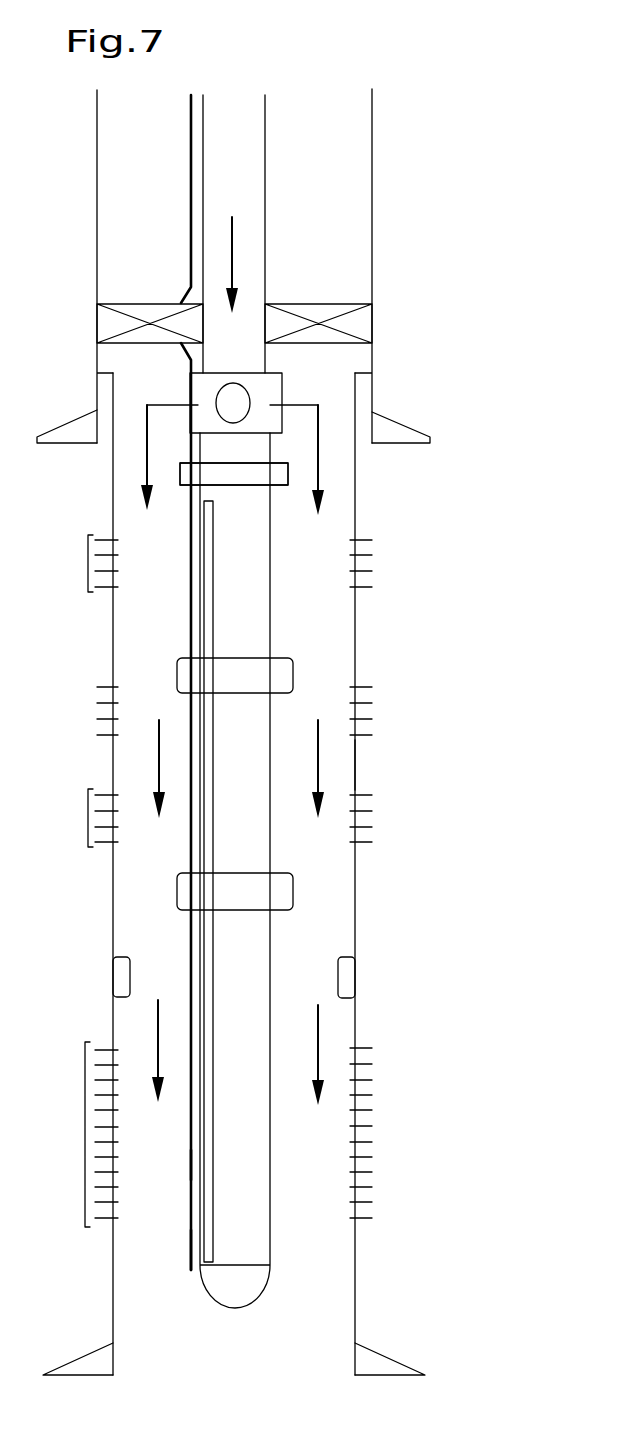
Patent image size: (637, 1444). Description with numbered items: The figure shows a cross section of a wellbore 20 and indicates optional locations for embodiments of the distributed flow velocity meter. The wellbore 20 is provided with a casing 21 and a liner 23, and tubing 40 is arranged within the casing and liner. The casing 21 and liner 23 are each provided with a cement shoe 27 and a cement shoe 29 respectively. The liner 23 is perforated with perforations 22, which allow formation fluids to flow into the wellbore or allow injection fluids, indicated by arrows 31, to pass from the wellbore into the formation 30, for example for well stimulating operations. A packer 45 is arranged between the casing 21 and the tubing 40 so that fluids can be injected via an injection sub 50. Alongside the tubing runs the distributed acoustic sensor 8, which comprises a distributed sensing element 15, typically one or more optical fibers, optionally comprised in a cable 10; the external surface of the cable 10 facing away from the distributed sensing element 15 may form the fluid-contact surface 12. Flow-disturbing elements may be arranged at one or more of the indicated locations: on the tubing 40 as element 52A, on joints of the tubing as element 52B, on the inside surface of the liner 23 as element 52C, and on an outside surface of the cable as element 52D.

The distributed acoustic sensor 8 is at (176, 148).
The cable 10 is at (180, 188).
The fluid-contact surface 12 is at (188, 818).
The distributed sensing element 15 is at (188, 1240).
The wellbore 20 is at (475, 828).
The casing 21 is at (97, 145).
The perforations 22 is at (88, 563).
The liner 23 is at (113, 620).
The cement shoe 27 is at (70, 432).
The cement shoe 29 is at (88, 1362).
The formation 30 is at (540, 549).
The injection fluids 31 is at (228, 230).
The tubing 40 is at (267, 255).
The packer 45 is at (113, 325).
The injection sub 50 is at (198, 397).
The flow-disturbing element 52A is at (220, 555).
The flow-disturbing element 52B is at (185, 668).
The flow-disturbing element 52C is at (120, 972).
The flow-disturbing element 52D is at (192, 1165).